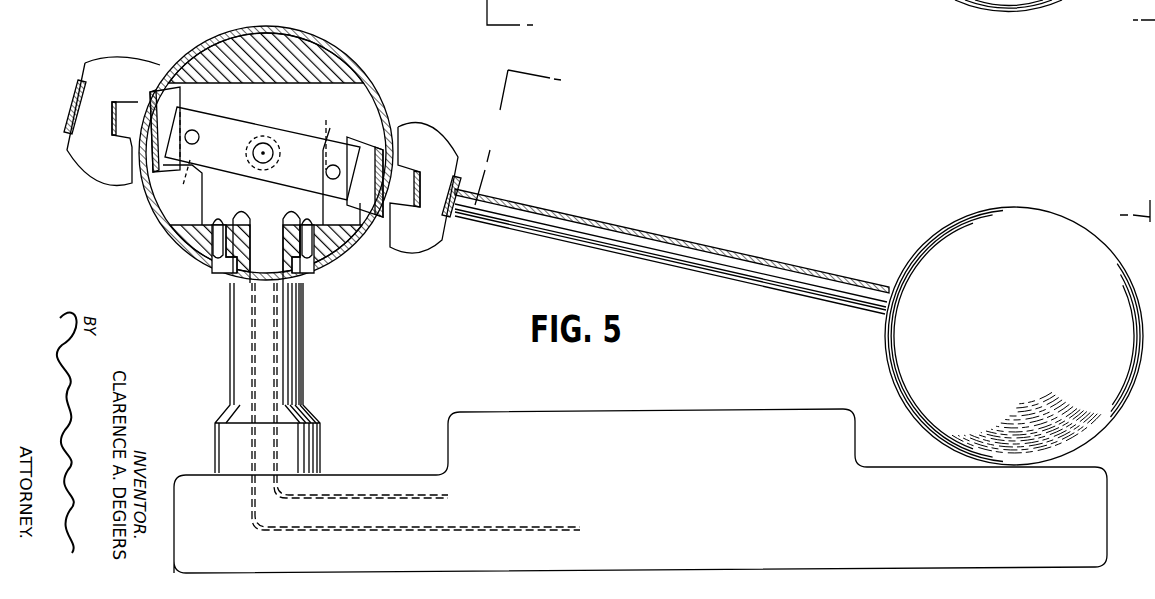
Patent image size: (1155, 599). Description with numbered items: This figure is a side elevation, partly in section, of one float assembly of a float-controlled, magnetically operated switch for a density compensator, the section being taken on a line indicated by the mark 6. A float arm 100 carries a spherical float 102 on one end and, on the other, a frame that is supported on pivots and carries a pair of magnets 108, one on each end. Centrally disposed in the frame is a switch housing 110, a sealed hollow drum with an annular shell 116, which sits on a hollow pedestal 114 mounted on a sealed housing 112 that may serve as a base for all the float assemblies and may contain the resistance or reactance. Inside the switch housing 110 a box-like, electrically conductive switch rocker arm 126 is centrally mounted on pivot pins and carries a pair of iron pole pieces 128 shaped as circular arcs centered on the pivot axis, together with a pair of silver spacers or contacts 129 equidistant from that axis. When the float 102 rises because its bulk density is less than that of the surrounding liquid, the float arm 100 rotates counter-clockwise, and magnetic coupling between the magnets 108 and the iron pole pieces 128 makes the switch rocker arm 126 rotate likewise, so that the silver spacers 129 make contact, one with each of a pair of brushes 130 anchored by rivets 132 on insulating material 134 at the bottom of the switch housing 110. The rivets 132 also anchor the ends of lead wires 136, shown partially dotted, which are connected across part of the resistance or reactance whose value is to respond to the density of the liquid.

The section line 6- 6 is at (62, 103).
The float arm 100 is at (636, 240).
The spherical float 102 is at (910, 265).
The magnets 108 is at (122, 68).
The switch housing 110 is at (354, 53).
The sealed housing 112 is at (728, 410).
The hollow pedestal 114 is at (303, 312).
The annular shell 116 is at (385, 95).
The switch rocker arm 126 is at (273, 133).
The iron pole pieces 128 is at (146, 198).
The silver spacers or contacts 129 is at (197, 131).
The brushes 130 is at (326, 116).
The rivets 132 is at (217, 220).
The insulating material 134 is at (178, 244).
The lead wires 136 is at (253, 343).